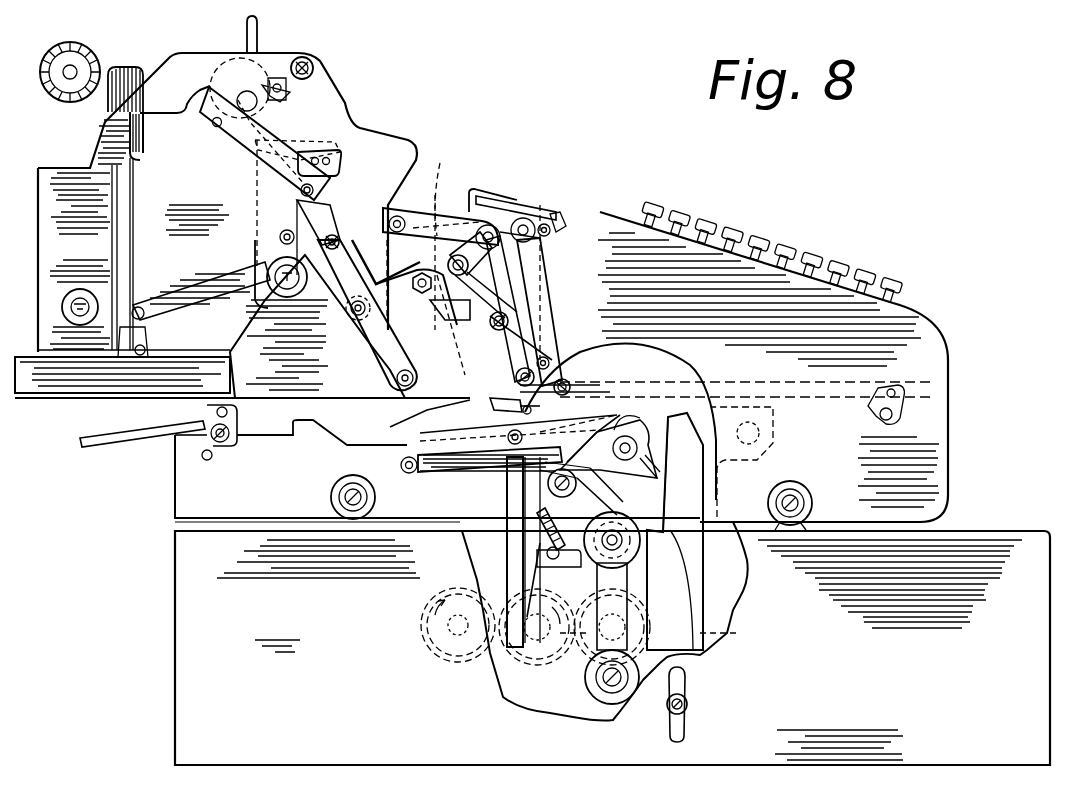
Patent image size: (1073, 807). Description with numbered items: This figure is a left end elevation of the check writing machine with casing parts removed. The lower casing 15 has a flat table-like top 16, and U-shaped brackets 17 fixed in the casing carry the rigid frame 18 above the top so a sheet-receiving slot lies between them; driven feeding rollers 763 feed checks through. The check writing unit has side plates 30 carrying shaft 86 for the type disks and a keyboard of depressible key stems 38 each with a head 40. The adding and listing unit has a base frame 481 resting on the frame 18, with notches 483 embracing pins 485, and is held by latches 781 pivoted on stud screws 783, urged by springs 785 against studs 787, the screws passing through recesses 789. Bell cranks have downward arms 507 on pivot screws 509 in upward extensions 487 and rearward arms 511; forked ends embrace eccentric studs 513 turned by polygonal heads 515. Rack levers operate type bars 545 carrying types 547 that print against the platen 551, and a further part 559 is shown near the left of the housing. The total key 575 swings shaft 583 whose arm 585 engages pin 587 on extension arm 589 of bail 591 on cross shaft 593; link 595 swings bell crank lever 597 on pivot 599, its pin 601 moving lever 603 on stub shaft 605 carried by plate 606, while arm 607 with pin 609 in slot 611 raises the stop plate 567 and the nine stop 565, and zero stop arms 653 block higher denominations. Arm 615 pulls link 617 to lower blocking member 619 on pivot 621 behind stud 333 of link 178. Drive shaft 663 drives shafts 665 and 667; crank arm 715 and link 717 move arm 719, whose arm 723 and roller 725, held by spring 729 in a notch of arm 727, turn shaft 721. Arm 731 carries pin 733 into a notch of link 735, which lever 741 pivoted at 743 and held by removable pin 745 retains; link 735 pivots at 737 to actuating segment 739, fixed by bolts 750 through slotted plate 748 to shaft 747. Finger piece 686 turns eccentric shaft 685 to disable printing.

The platen 551 is at (48, 55).
The types 547 is at (108, 108).
The type bars 545 is at (118, 225).
The bearing 559 is at (61, 307).
The total and sub-total key 575 is at (246, 31).
The arm 585 is at (284, 78).
The shaft 583 is at (314, 66).
The cross shaft 593 is at (247, 91).
The pin 587 is at (283, 97).
The extension arm 589 is at (288, 115).
The bail 591 is at (212, 118).
The link 595 is at (244, 148).
The bell crank lever 597 is at (300, 227).
The pivot 599 is at (279, 240).
The bolts 750 is at (332, 234).
The plate 748 is at (390, 228).
The pin 601 is at (410, 212).
The lever 603 is at (444, 226).
The zero stop arms 653 is at (437, 191).
The 9 stop 565 is at (475, 188).
The stop plate 567 is at (500, 200).
The stub shaft 605 is at (524, 218).
The arm 607 is at (546, 223).
The pin 609 is at (560, 215).
The slot 611 is at (543, 247).
The arm 615 is at (448, 259).
The upwardly extending plate 606 is at (483, 275).
The link 617 is at (548, 268).
The pivot screws 509 is at (515, 318).
The rearwardly extending arms 511 is at (418, 282).
The downwardly extending arms 507 is at (540, 330).
The pivot screw 621 is at (535, 340).
The blocking member 619 is at (565, 356).
The side plates 30 is at (620, 422).
The stud 333 is at (572, 380).
The upward extension 487 is at (580, 394).
The arm 731 is at (620, 420).
The link 178 is at (672, 384).
The head 40 is at (772, 238).
The key stems 38 is at (898, 300).
The shaft 86 is at (760, 432).
The pin 733 is at (690, 531).
The shaft 747 is at (345, 312).
The actuating segment 739 is at (362, 345).
The pivot 737 is at (396, 378).
The polygonal heads 515 is at (468, 320).
The studs 513 is at (505, 400).
The pins 485 is at (501, 407).
The notches 483 is at (544, 408).
The link 735 is at (583, 430).
The base frame 481 is at (242, 397).
The pivot 743 is at (518, 429).
The removable pin 745 is at (400, 464).
The lever 741 is at (480, 466).
The studs 787 is at (217, 413).
The recesses 789 is at (238, 420).
The latches 781 is at (180, 432).
The stud screws 783 is at (216, 443).
The springs 785 is at (202, 458).
The frame 18 is at (437, 478).
The rollers 763 is at (330, 498).
The shaft 721 is at (595, 486).
The arm 719 is at (600, 505).
The arm 727 is at (621, 524).
The spring 729 is at (538, 520).
The U-shaped brackets 17 is at (508, 572).
The roller 725 is at (553, 559).
The arm 723 is at (580, 568).
The link 717 is at (613, 606).
The drive shaft 663 is at (452, 632).
The shaft 665 is at (535, 640).
The crank arm 715 is at (590, 648).
The shaft 667 is at (712, 648).
The finger piece 686 is at (686, 680).
The shaft 685 is at (688, 704).
The lower casing 15 is at (914, 687).
The top 16 is at (995, 531).